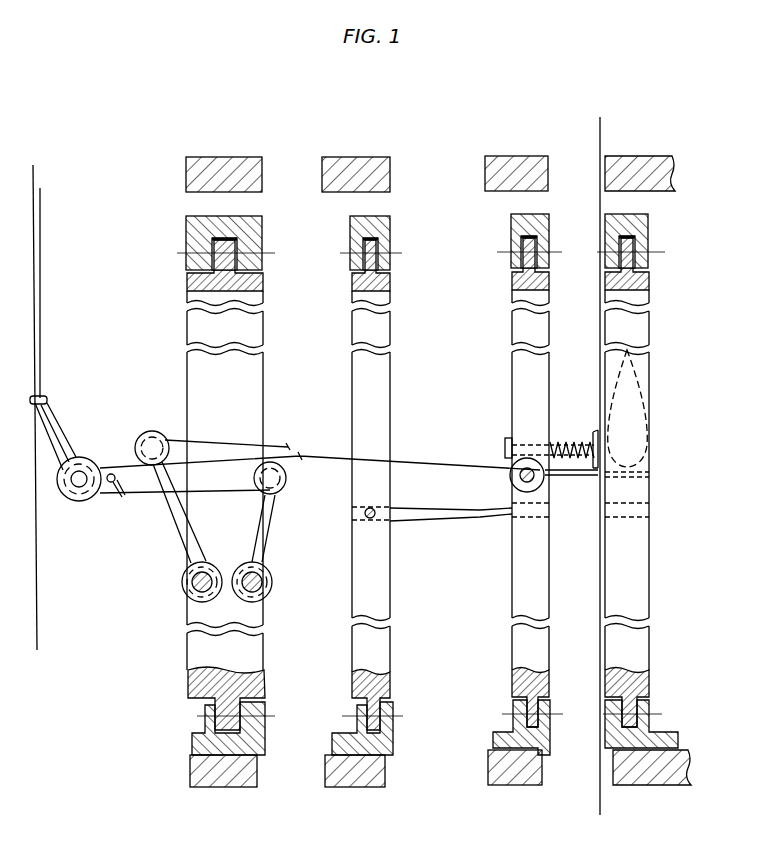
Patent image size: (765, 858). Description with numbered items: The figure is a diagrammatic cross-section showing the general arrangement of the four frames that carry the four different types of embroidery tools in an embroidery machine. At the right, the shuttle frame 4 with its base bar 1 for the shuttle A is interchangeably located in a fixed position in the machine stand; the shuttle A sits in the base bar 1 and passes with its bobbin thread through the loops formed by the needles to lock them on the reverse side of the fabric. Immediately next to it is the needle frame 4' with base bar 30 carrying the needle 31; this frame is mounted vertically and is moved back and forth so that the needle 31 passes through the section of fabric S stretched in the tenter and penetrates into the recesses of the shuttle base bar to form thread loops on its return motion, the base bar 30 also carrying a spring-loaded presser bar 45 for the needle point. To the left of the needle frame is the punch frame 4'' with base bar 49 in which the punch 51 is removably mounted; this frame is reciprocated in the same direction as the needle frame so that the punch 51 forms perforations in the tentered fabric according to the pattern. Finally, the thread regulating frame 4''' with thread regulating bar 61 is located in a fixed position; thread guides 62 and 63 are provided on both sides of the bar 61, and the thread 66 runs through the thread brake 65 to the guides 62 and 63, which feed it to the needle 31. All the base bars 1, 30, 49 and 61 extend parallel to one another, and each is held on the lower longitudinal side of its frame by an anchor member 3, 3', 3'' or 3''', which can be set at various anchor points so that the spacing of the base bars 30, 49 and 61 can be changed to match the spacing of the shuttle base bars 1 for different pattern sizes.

The base bar 1 is at (650, 590).
The anchor member 3 is at (645, 480).
The anchor member 3' is at (506, 484).
The anchor member 3'' is at (350, 485).
The anchor member 3''' is at (205, 485).
The frame 4 is at (648, 474).
The frame 4' is at (516, 474).
The frame 4'' is at (356, 477).
The frame 4''' is at (224, 477).
The base bar 30 is at (516, 583).
The needle 31 is at (573, 478).
The spring-loaded presser bar 45 is at (593, 431).
The base bar 49 is at (386, 583).
The punch 51 is at (444, 520).
The thread regulating bar 61 is at (257, 368).
The thread guide 62 is at (283, 490).
The thread guide 63 is at (148, 431).
The thread brake 65 is at (78, 502).
The thread 66 is at (39, 318).
The shuttle A is at (636, 412).
The section of fabric S is at (600, 792).